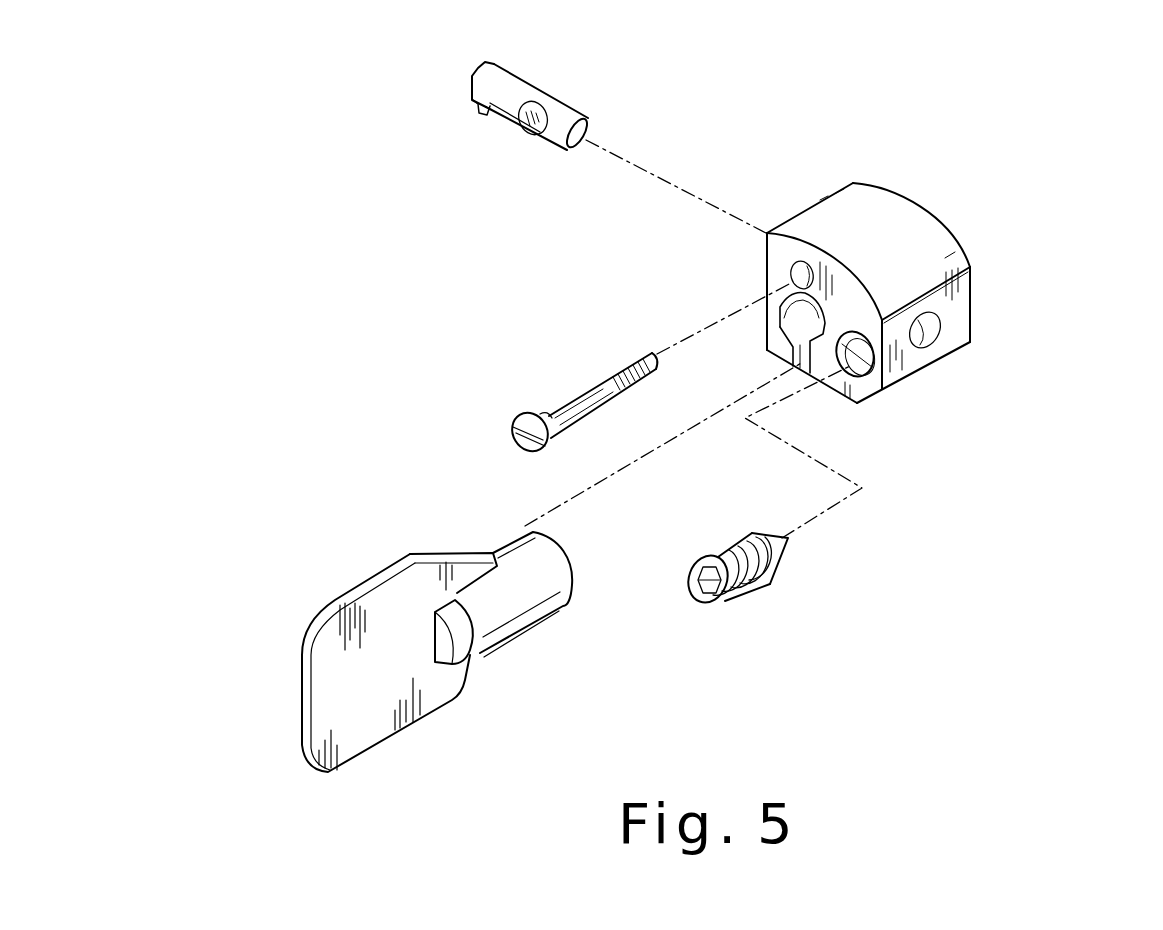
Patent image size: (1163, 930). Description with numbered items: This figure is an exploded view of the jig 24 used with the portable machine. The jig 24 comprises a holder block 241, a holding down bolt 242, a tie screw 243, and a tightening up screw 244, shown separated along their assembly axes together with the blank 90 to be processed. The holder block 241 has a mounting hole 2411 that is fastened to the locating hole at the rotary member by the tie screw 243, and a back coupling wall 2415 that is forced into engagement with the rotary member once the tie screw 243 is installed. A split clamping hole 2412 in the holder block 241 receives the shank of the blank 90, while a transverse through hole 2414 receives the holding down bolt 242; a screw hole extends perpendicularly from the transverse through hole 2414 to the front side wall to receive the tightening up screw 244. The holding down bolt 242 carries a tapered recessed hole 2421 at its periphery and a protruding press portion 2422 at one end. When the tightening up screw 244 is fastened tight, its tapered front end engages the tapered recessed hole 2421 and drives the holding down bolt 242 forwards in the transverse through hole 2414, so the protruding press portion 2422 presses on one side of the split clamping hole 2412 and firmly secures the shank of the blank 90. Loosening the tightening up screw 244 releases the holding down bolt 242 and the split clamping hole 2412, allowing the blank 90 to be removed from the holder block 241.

The jig 24 is at (1024, 303).
The holder block 241 is at (880, 226).
The mounting hole 2411 is at (791, 262).
The split clamping hole 2412 is at (799, 360).
The transverse through hole 2414 is at (940, 348).
The back coupling wall 2415 is at (968, 268).
The holding down bolt 242 is at (557, 98).
The tapered recessed hole 2421 is at (536, 135).
The protruding press portion 2422 is at (477, 108).
The tie screw 243 is at (872, 378).
The tightening up screw 244 is at (760, 573).
The blank 90 is at (387, 604).